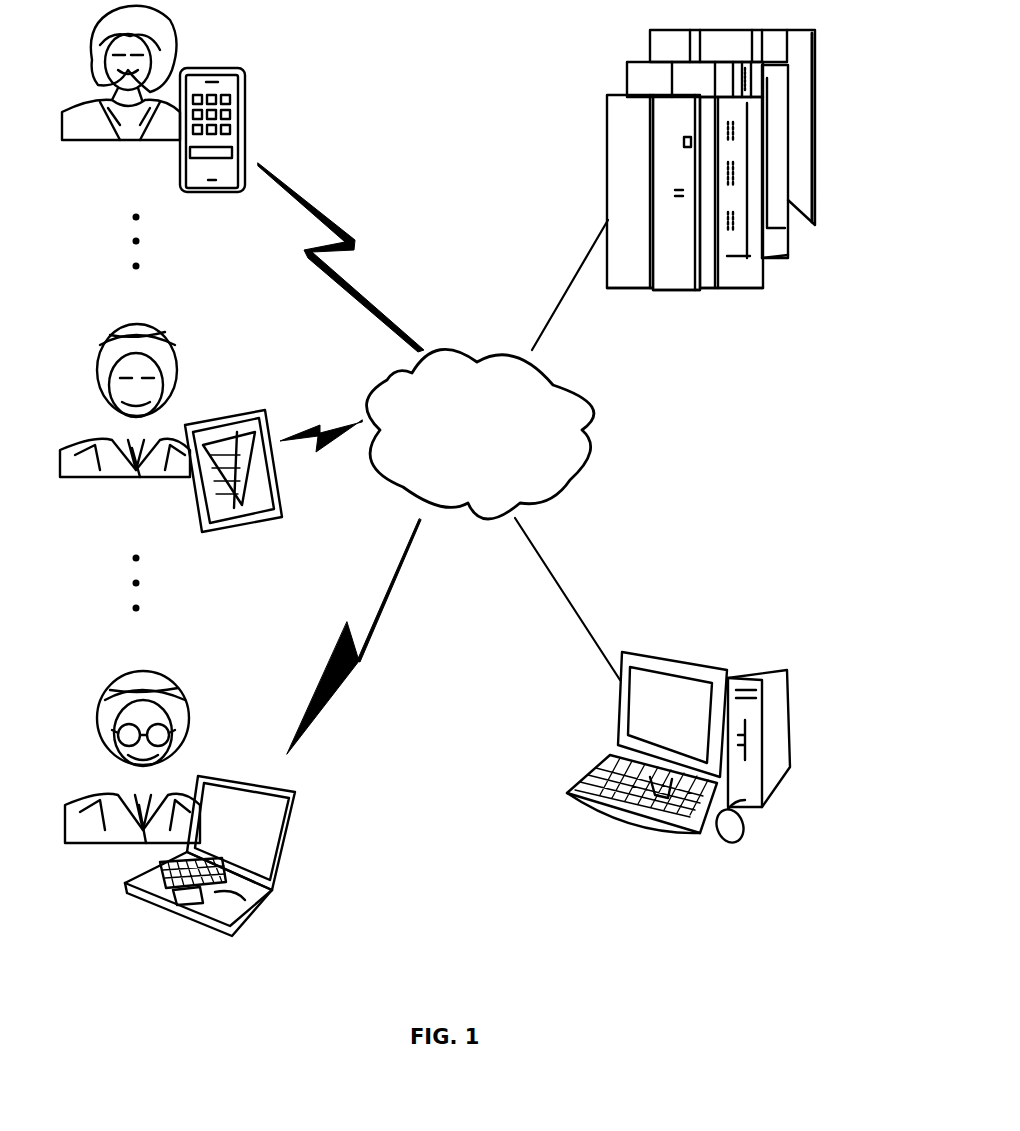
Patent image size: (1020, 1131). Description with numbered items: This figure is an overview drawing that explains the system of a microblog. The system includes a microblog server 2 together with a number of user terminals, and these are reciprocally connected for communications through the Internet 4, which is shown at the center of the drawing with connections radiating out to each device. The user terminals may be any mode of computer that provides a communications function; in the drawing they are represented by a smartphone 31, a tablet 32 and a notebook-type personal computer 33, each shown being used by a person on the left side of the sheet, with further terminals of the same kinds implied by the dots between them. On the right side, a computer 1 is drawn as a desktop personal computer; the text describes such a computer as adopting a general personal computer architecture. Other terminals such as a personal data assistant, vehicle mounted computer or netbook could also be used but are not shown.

The computer 1 is at (766, 690).
The microblog server 2 is at (604, 130).
The Internet 4 is at (482, 444).
The smartphone 31 is at (248, 92).
The tablet 32 is at (232, 410).
The personal computer (notebook type) 33 is at (296, 820).